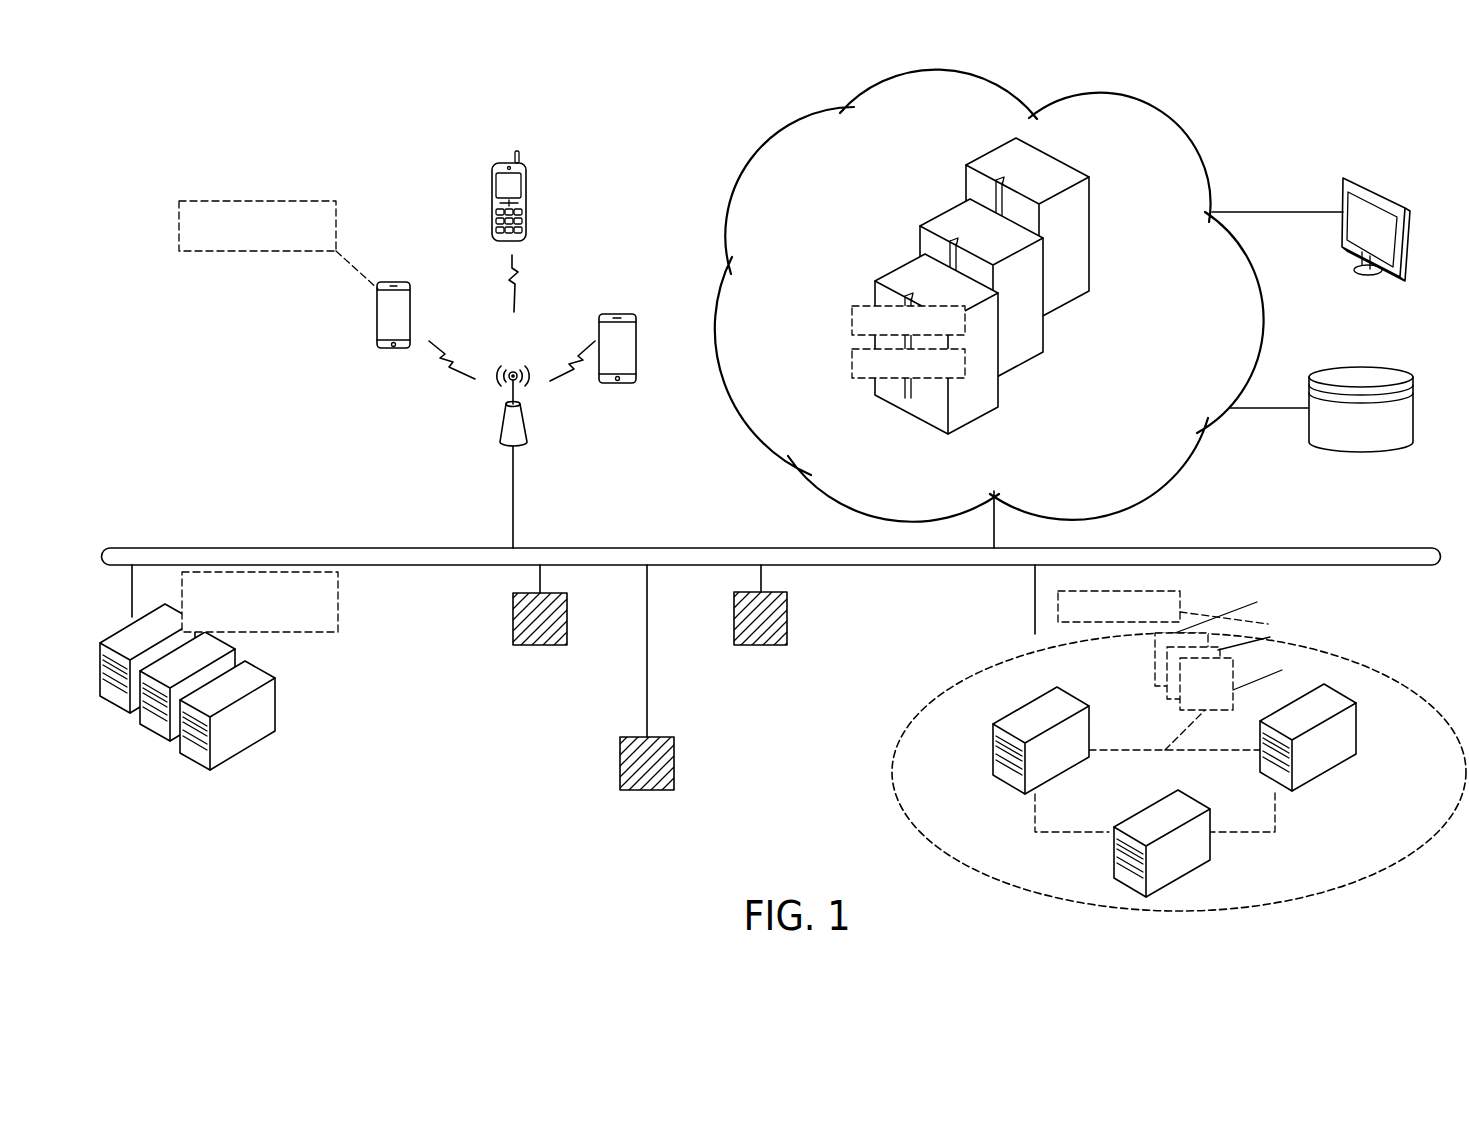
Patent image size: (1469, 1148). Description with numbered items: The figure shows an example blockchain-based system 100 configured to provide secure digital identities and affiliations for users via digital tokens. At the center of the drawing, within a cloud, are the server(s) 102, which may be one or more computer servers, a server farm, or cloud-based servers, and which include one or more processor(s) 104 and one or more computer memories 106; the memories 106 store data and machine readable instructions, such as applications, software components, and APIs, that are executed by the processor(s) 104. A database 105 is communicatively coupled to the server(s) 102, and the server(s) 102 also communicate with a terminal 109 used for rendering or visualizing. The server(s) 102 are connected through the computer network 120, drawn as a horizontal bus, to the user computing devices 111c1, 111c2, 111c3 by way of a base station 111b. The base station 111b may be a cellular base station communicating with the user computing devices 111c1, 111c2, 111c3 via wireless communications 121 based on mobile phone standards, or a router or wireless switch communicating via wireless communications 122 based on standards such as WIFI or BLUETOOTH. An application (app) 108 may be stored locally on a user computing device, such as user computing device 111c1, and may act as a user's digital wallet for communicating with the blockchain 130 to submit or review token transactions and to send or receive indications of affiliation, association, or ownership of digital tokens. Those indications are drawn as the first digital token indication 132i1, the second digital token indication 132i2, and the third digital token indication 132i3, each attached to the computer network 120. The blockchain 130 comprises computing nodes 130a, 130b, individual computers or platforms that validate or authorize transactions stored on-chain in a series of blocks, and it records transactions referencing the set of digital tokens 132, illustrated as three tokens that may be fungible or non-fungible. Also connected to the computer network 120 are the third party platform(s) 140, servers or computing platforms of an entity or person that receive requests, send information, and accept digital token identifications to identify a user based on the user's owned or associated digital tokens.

The blockchain-based system 100 is at (646, 110).
The server(s) 102 is at (992, 152).
The processor(s) 104 is at (852, 320).
The database 105 is at (1362, 366).
The memories 106 is at (852, 363).
The application (app) 108 is at (336, 226).
The terminal 109 is at (1357, 177).
The base station 111b is at (503, 421).
The user computing device 111c1 is at (377, 320).
The user computing device 111c2 is at (527, 201).
The user computing device 111c3 is at (611, 314).
The computer network 120 is at (745, 546).
The wireless communications 121 is at (518, 270).
The wireless communications 122 is at (445, 363).
The blockchain 130 is at (1058, 607).
The computing node 130a is at (1046, 699).
The computing node 130b is at (1165, 795).
The set of digital tokens 132 is at (1145, 660).
The digital token 1 indication 132i1 is at (513, 620).
The digital token 2 indication 132i2 is at (620, 785).
The digital token 3 indication 132i3 is at (789, 606).
The third party platform(s) 140 is at (257, 672).